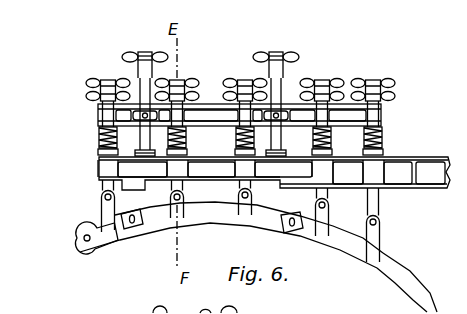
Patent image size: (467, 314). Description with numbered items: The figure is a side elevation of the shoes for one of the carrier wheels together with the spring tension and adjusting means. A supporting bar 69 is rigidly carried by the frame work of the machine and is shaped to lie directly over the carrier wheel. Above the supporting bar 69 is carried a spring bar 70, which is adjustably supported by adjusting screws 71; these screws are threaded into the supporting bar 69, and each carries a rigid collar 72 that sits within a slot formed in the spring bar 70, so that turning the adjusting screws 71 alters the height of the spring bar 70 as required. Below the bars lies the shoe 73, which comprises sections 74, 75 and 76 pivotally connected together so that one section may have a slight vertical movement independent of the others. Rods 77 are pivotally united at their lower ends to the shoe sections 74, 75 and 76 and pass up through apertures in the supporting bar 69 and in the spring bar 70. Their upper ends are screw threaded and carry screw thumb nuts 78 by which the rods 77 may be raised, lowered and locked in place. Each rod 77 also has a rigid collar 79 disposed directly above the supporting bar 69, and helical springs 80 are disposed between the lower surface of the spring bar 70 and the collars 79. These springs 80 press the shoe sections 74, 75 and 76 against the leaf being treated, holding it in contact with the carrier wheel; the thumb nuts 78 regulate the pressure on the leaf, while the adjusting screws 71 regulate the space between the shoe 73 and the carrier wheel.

The supporting bar 69 is at (393, 172).
The spring bar 70 is at (353, 111).
The adjusting screw 71 is at (140, 70).
The rigid collar 72 is at (103, 117).
The shoe 73 is at (240, 228).
The shoe section 74 is at (108, 244).
The shoe section 75 is at (168, 226).
The shoe section 76 is at (390, 272).
The rod 77 is at (99, 186).
The screw thumb nut 78 is at (88, 96).
The rigid collar 79 is at (238, 152).
The helical spring 80 is at (237, 137).